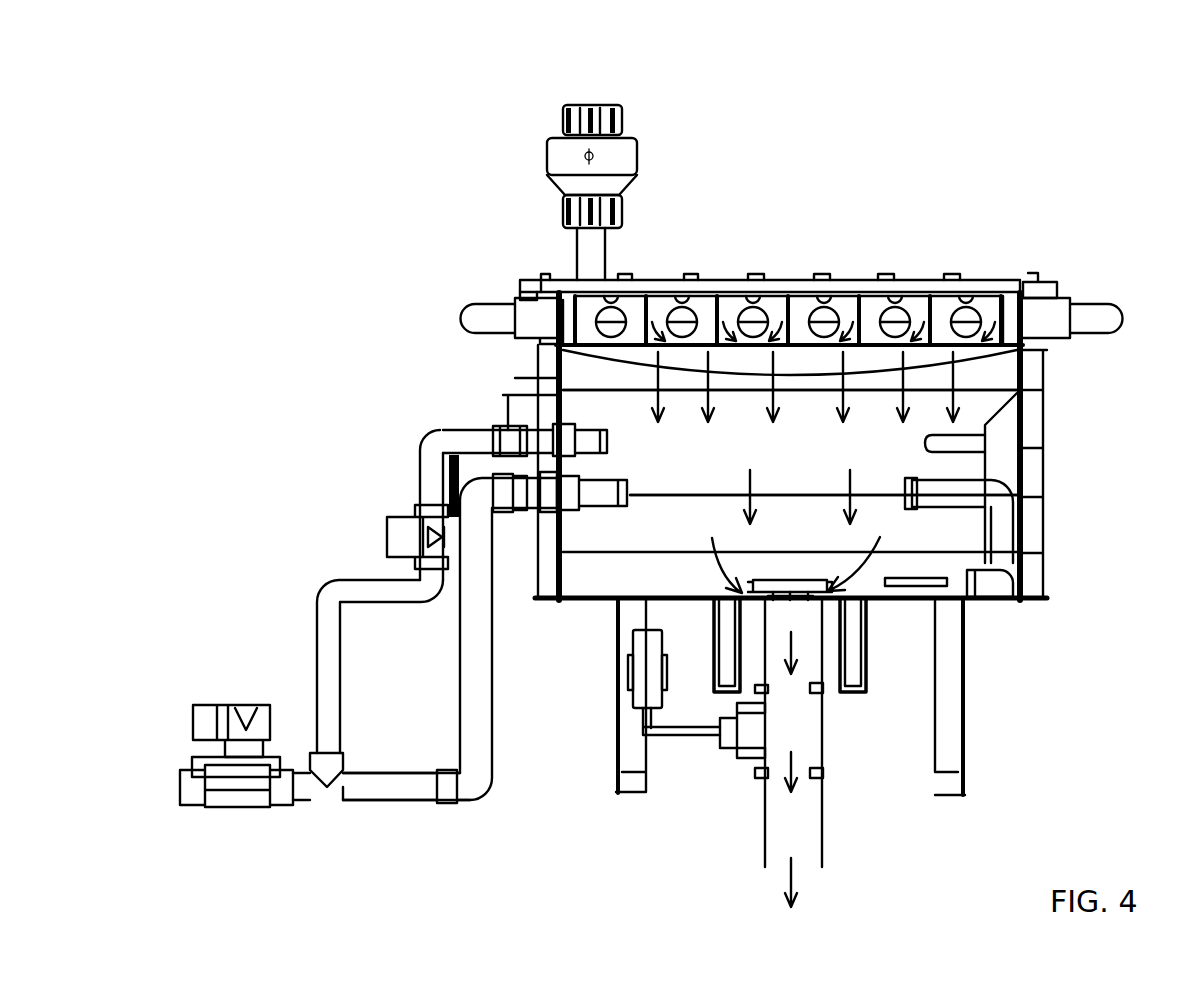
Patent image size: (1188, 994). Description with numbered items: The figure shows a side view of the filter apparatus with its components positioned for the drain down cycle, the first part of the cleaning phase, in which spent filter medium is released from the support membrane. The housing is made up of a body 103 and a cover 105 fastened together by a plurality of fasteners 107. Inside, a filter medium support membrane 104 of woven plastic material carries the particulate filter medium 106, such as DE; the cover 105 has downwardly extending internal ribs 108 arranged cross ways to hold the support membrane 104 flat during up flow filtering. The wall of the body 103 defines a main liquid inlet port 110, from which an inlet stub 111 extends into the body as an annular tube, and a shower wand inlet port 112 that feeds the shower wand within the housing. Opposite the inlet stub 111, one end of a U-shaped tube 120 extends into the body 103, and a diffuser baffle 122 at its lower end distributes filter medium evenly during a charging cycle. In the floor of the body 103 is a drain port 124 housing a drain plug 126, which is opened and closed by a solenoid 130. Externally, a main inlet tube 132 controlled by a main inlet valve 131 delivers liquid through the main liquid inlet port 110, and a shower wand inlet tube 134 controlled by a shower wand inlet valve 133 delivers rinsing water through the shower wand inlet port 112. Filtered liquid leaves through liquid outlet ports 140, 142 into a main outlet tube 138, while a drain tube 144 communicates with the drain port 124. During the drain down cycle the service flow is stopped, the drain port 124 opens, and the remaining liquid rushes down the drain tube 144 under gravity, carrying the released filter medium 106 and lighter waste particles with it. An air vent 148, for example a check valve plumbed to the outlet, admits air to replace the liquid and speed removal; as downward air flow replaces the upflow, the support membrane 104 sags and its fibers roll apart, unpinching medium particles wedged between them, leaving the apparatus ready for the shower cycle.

The body 103 is at (1022, 475).
The filter medium support membrane 104 is at (1003, 352).
The cover 105 is at (978, 283).
The filter medium 106 is at (826, 472).
The fasteners 107 is at (880, 277).
The internal ribs 108 is at (775, 308).
The main liquid inlet port 110 is at (557, 490).
The inlet stub 111 is at (612, 497).
The shower wand inlet port 112 is at (557, 443).
The U-shaped tube 120 is at (1007, 533).
The diffuser baffle 122 is at (1017, 592).
The drain port 124 is at (790, 597).
The drain plug 126 is at (817, 600).
The solenoid 130 is at (648, 690).
The main inlet valve 131 is at (222, 700).
The main inlet tube 132 is at (398, 790).
The shower wand inlet valve 133 is at (383, 530).
The shower wand inlet tube 134 is at (320, 625).
The main outlet tube 138 is at (478, 300).
The liquid outlet port 140 is at (560, 318).
The liquid outlet port 142 is at (1020, 318).
The drain tube 144 is at (805, 822).
The air vent 148 is at (565, 105).